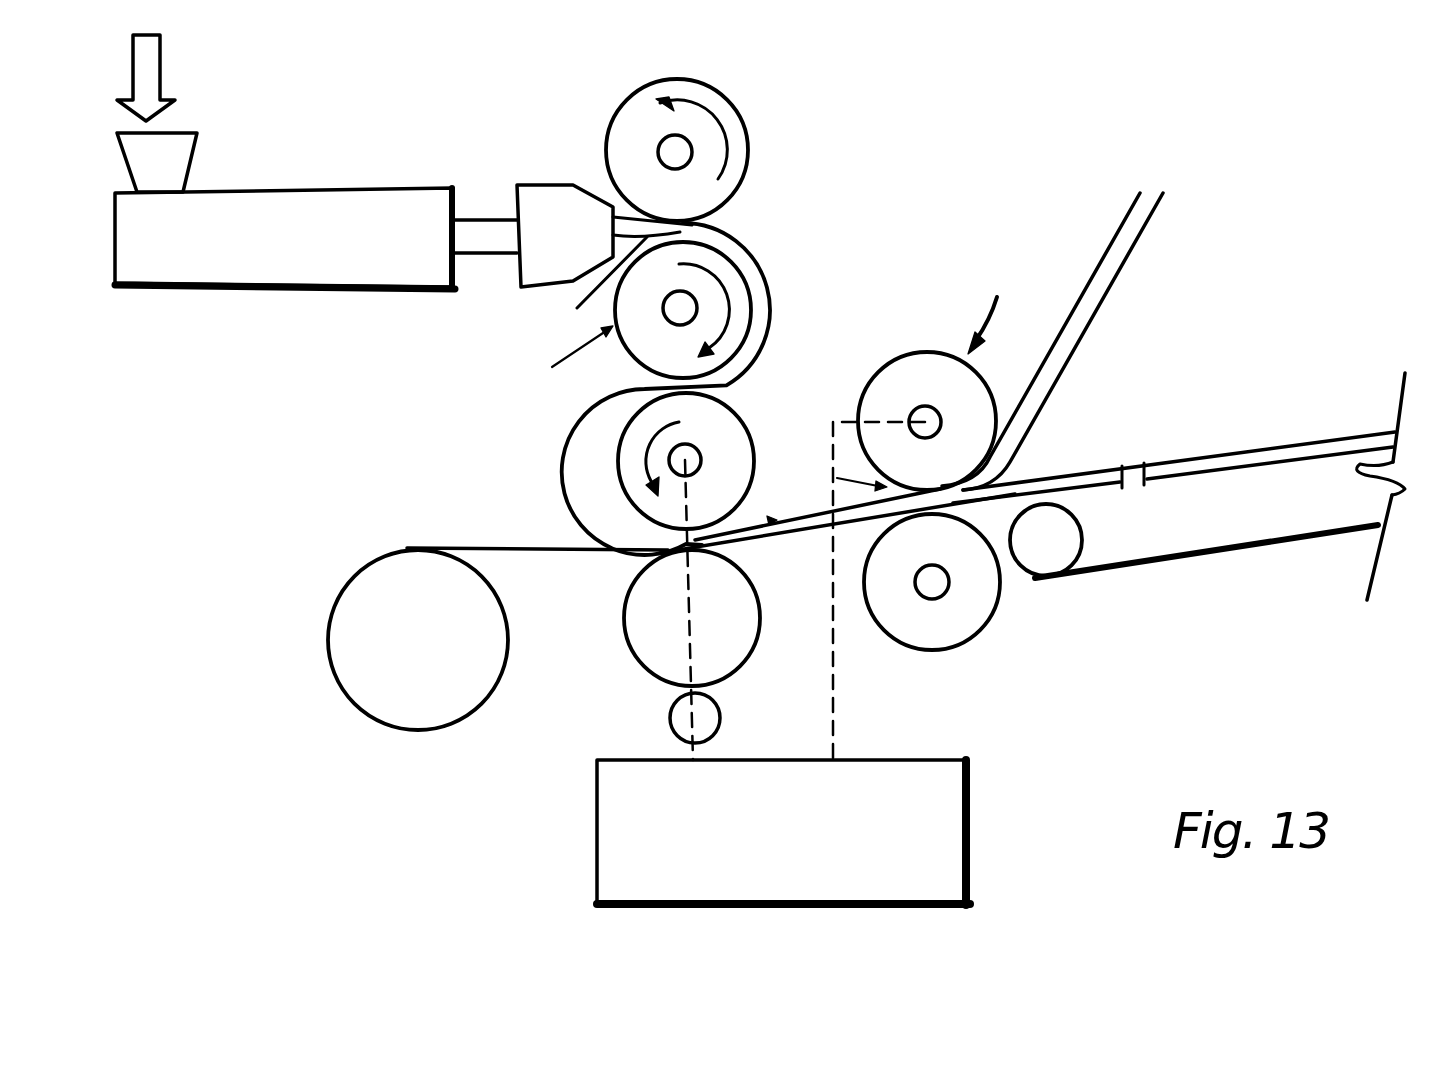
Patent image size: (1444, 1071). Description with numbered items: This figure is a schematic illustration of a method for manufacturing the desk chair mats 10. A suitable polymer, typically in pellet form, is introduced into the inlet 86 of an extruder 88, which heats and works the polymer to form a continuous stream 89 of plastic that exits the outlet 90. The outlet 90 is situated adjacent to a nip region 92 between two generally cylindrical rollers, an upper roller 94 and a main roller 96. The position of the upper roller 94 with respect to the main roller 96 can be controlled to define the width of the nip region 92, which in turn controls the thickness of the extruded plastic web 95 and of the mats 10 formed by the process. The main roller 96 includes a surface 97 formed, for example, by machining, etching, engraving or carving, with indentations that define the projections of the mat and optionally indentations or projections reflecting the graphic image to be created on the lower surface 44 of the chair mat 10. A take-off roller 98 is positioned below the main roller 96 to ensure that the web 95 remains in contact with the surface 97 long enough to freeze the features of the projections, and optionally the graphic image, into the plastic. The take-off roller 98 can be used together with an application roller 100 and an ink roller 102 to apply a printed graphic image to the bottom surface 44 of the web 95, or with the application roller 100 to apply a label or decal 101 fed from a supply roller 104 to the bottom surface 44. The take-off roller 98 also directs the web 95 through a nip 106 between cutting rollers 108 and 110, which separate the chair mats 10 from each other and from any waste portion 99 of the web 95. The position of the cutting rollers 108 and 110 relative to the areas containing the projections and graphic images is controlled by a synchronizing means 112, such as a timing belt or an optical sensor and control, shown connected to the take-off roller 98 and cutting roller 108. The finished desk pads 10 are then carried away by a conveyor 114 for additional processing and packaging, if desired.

The chair mat 10 is at (1297, 452).
The lower surface 44 is at (597, 487).
The inlet 86 is at (200, 133).
The extruder 88 is at (338, 246).
The continuous stream 89 is at (587, 289).
The outlet 90 is at (590, 238).
The nip region 92 is at (722, 219).
The upper roller 94 is at (717, 91).
The web 95 is at (750, 250).
The main roller 96 is at (622, 342).
The surface 97 is at (566, 362).
The take-off roller 98 is at (745, 423).
The waste portion 99 is at (1085, 328).
The application roller 100 is at (643, 633).
The label or decal 101 is at (550, 553).
The ink roller 102 is at (708, 720).
The supply roller 104 is at (380, 655).
The nip 106 is at (835, 478).
The cutting roller 108 is at (866, 392).
The cutting roller 110 is at (967, 622).
The synchronizing means 112 is at (597, 810).
The conveyor 114 is at (1185, 560).